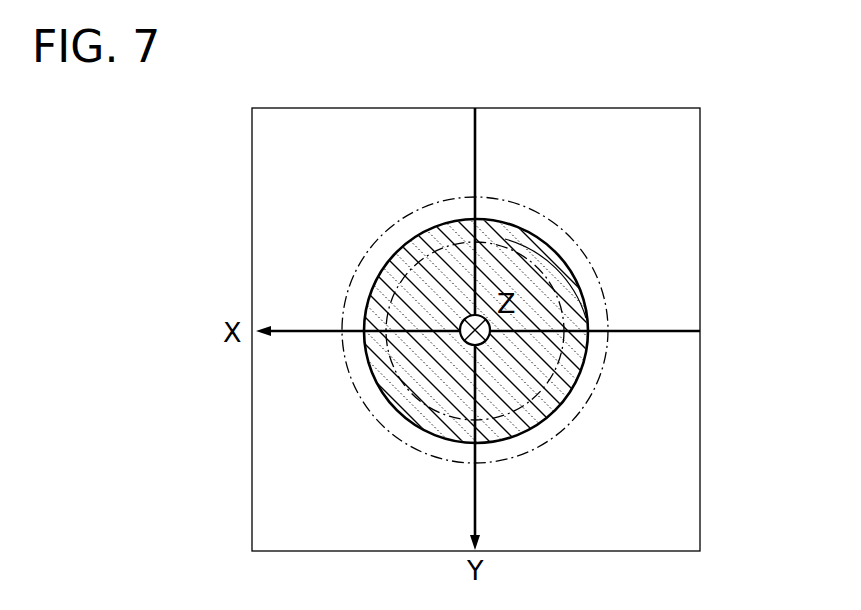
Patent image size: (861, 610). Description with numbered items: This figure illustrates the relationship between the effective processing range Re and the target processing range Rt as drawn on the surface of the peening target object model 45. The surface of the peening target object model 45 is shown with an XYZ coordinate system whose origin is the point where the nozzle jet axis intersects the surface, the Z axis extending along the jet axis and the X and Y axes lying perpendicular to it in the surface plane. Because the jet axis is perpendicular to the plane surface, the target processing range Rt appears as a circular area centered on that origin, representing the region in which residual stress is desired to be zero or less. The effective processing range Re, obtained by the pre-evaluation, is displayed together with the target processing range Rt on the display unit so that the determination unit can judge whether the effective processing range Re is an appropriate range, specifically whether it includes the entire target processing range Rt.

The peening target object model 45 is at (712, 425).
The effective processing range Re is at (557, 262).
The target processing range Rt is at (547, 213).